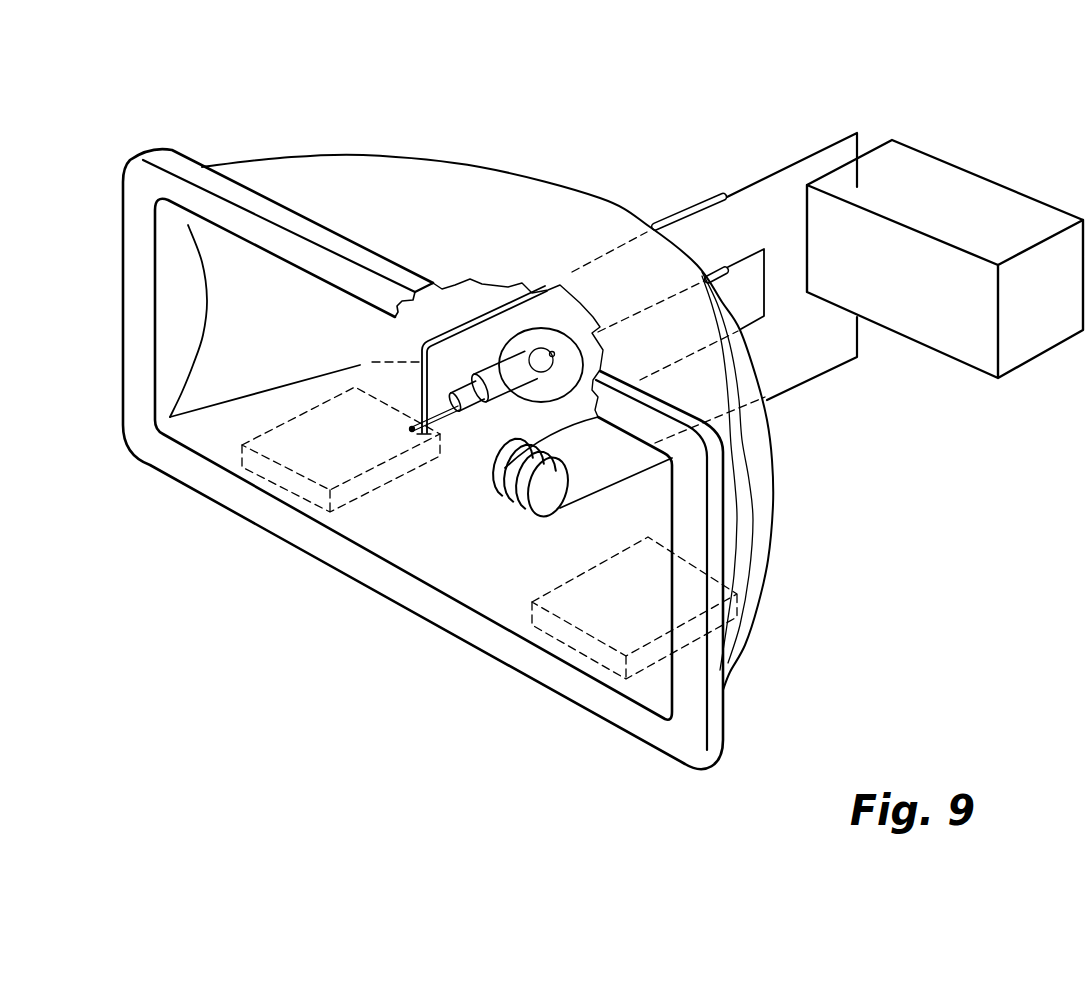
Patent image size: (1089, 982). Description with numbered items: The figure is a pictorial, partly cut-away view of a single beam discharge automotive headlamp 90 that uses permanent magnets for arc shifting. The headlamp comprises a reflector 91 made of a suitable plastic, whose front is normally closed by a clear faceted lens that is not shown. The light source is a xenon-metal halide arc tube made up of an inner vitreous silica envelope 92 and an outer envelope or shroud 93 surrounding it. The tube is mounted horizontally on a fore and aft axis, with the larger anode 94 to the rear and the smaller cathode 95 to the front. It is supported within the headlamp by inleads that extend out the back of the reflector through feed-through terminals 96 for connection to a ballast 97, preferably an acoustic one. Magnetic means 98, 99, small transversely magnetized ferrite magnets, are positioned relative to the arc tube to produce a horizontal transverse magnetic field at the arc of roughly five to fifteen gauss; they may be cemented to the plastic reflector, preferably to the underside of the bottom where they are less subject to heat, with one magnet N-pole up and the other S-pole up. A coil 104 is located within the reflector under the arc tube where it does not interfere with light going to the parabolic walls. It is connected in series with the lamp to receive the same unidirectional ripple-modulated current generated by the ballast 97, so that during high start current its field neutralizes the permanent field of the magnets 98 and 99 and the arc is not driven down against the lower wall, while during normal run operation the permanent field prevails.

The automotive headlamp 90 is at (470, 144).
The reflector 91 is at (280, 160).
The inner vitreous silica envelope 92 is at (531, 350).
The outer envelope or shroud 93 is at (547, 328).
The anode 94 is at (552, 353).
The cathode 95 is at (528, 370).
The feed-through terminals 96 is at (706, 223).
The ballast 97 is at (983, 173).
The magnetic means (ferrite magnet) 98 is at (550, 650).
The magnetic means (ferrite magnet) 99 is at (277, 485).
The coil 104 is at (510, 500).